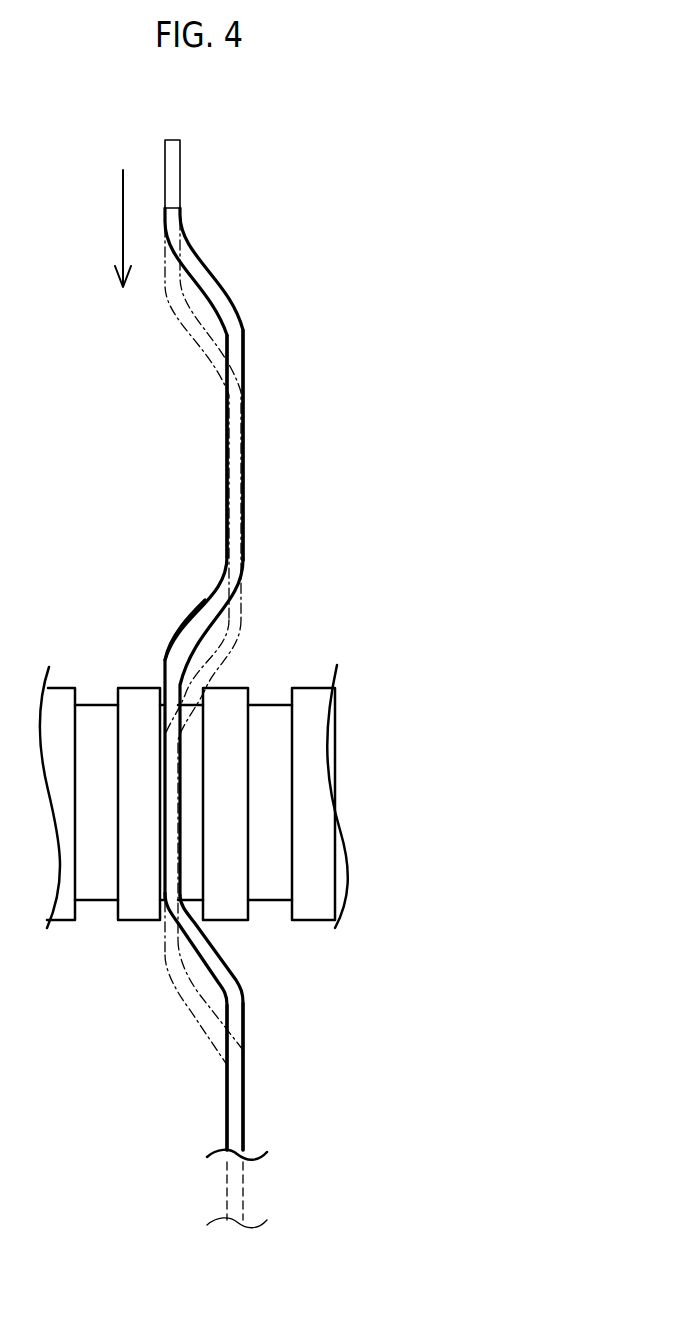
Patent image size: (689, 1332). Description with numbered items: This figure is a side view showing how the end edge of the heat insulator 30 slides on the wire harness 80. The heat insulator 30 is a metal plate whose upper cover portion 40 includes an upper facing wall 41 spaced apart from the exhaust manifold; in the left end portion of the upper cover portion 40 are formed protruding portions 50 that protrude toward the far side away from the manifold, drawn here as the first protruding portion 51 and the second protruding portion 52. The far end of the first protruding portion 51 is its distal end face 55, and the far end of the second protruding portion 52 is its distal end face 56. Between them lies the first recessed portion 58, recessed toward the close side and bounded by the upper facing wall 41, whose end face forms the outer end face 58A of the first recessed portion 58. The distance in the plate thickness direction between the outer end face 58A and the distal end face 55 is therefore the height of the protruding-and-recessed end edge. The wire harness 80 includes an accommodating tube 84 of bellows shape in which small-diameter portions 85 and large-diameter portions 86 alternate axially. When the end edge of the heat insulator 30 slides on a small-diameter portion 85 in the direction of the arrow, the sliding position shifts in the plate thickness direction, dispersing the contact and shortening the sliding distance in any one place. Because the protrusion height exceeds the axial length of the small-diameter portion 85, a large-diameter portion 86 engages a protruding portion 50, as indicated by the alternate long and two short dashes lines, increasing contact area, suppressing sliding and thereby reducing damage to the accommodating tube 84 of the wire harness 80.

The heat insulator 30 is at (320, 684).
The upper cover portion 40 is at (485, 285).
The upper facing wall 41 is at (180, 165).
The protruding portions 50 is at (221, 718).
The first protruding portion 51 is at (266, 414).
The second protruding portion 52 is at (260, 1060).
The distal end face 55 is at (245, 485).
The distal end face 56 is at (243, 1125).
The first recessed portion 58 is at (184, 756).
The outer end face 58A is at (160, 658).
The wire harness 80 is at (234, 838).
The accommodating tube 84 is at (322, 857).
The small-diameter portion 85 is at (190, 857).
The large-diameter portion 86 is at (237, 877).